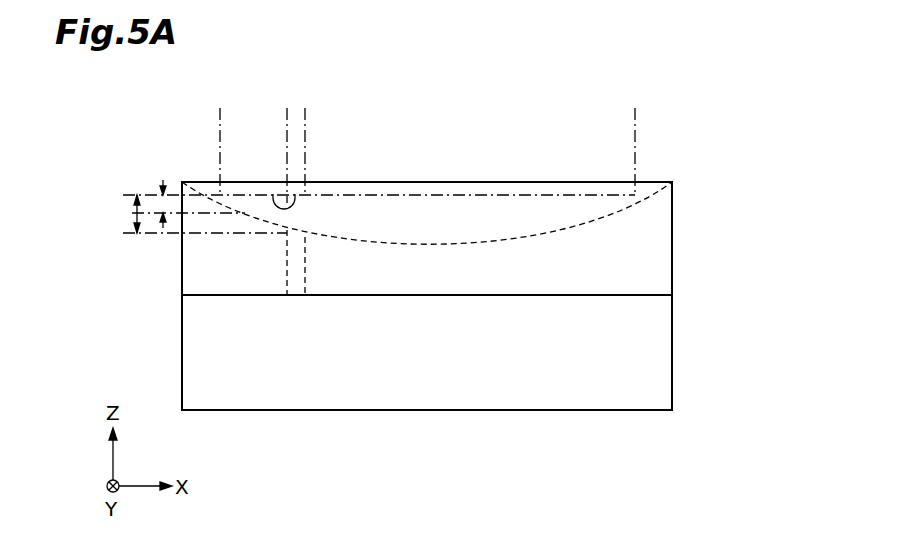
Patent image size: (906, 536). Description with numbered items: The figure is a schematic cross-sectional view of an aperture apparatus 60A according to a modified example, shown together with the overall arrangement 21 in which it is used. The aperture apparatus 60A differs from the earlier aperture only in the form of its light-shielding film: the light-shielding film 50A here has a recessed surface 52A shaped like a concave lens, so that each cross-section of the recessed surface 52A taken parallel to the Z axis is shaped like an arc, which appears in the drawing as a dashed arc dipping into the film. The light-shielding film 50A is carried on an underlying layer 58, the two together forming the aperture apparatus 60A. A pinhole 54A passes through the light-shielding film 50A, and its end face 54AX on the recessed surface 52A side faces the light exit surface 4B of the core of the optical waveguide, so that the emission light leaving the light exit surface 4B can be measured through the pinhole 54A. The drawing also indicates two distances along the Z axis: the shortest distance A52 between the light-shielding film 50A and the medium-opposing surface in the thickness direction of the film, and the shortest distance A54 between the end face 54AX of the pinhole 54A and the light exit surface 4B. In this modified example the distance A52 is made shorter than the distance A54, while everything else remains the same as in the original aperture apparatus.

The semiconductor device 21 is at (611, 77).
The light exit surface 4B is at (273, 194).
The shortest distance A52 is at (160, 204).
The shortest distance A54 is at (113, 214).
The recessed surface 52A is at (574, 228).
The pinhole 54A is at (306, 265).
The end face 54AX is at (290, 232).
The light-shielding film 50A is at (660, 260).
The lower layer 58 is at (660, 348).
The aperture apparatus 60A is at (748, 248).